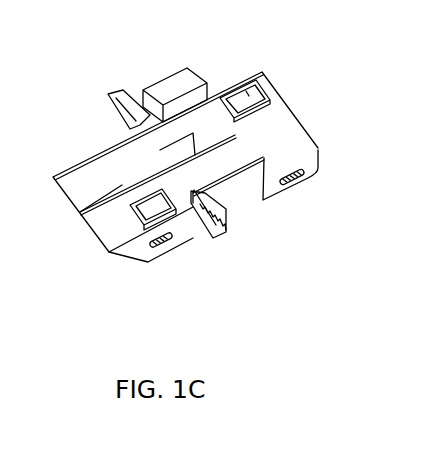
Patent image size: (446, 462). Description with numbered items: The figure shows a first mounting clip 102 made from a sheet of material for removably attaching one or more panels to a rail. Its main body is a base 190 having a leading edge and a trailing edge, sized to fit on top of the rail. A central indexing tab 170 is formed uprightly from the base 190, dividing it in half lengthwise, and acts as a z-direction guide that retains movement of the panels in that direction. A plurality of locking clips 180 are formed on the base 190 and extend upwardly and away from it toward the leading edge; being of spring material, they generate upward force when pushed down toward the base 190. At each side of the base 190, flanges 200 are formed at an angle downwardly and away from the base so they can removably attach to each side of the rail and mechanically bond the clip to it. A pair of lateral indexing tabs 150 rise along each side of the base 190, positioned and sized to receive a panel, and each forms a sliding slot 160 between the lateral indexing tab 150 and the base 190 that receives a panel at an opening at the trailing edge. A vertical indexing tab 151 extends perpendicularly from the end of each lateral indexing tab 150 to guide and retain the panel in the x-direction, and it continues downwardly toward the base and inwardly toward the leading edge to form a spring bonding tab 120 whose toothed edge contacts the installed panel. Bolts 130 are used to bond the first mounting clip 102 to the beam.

The first mounting clip 102 is at (237, 307).
The spring bonding tab 120 is at (223, 233).
The bolts 130 is at (313, 157).
The lateral indexing tabs 150 is at (197, 83).
The vertical indexing tab 151 is at (195, 228).
The sliding slot 160 is at (140, 112).
The central indexing tab 170 is at (118, 183).
The locking clips 180 is at (247, 93).
The base 190 is at (110, 233).
The flanges 200 is at (133, 247).